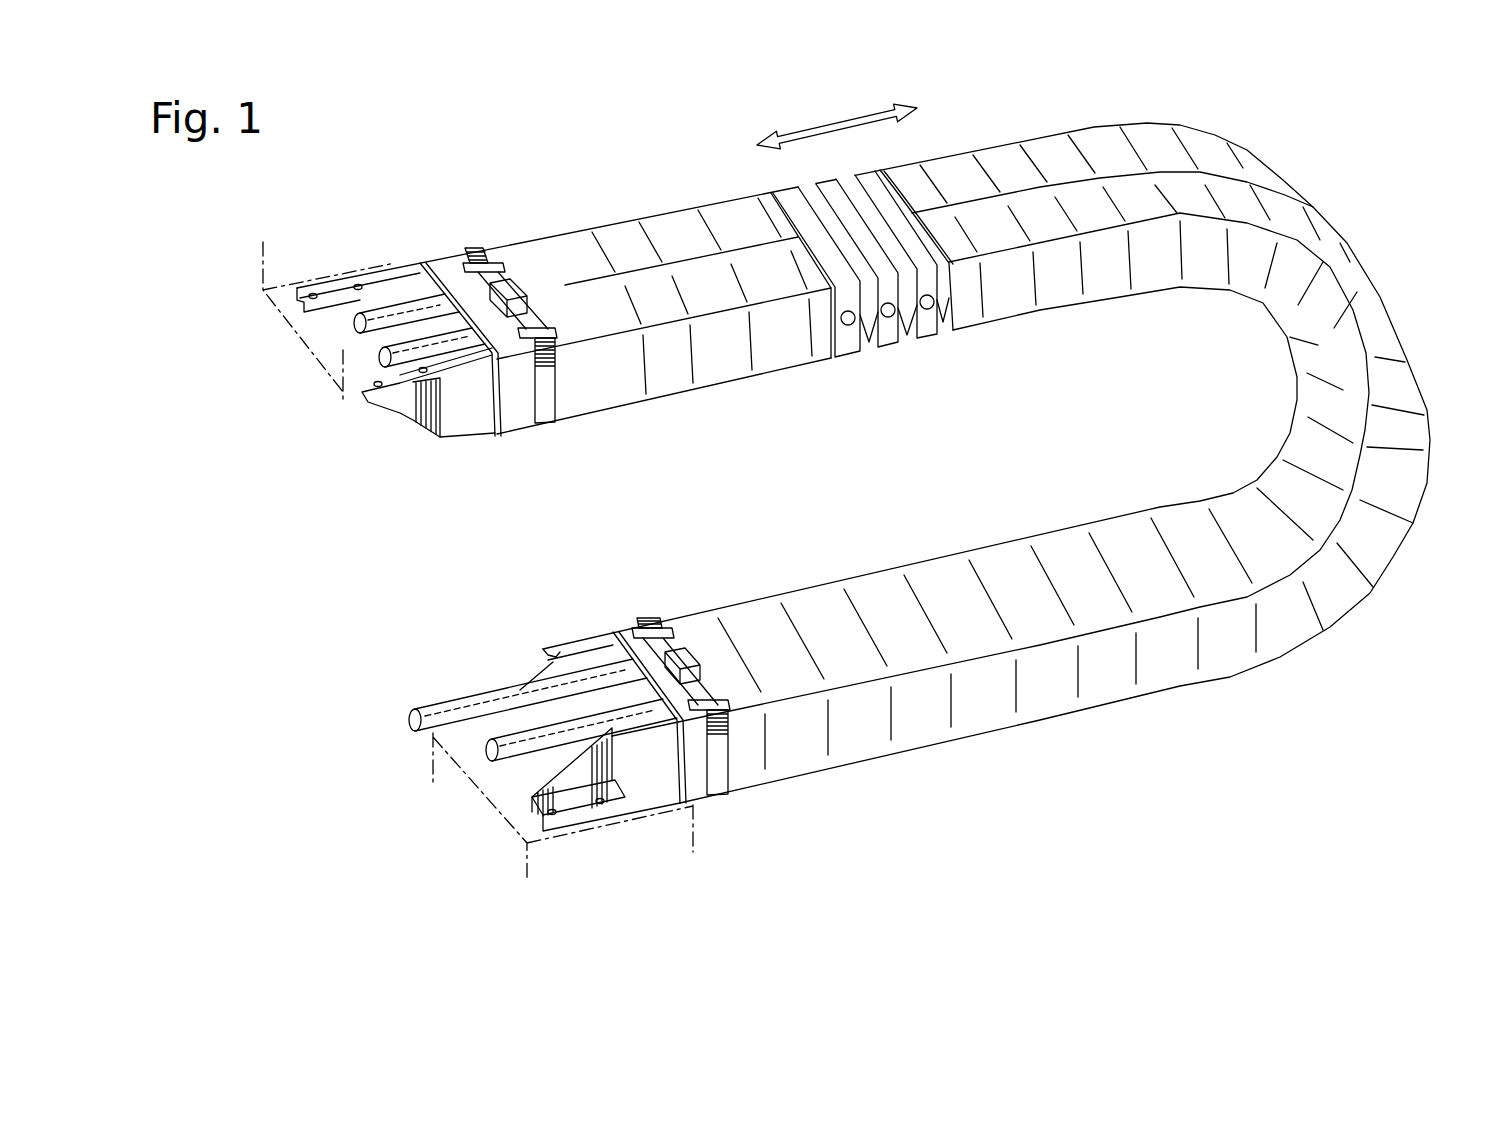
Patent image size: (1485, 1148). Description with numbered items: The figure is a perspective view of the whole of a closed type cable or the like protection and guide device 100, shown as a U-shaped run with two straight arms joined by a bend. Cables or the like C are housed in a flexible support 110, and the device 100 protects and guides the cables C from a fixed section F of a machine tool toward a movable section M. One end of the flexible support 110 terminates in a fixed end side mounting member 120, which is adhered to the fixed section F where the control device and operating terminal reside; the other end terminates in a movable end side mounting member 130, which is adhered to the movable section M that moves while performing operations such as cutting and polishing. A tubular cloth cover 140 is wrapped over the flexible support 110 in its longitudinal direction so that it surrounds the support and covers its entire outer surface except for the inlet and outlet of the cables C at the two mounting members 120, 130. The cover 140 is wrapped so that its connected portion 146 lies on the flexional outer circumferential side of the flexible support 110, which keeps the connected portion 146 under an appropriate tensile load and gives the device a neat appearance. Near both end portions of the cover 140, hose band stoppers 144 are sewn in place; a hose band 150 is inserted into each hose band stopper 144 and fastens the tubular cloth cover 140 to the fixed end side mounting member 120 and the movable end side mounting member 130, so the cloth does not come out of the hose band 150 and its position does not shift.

The closed type cable or the like protection and guide device 100 is at (863, 518).
The flexible support 110 is at (893, 335).
The fixed end side mounting member 120 is at (577, 657).
The movable end side mounting member 130 is at (327, 315).
The tubular cloth cover 140 is at (717, 350).
The hose band stopper 144 is at (487, 256).
The connected portion 146 is at (668, 213).
The hose band 150 is at (465, 281).
The cable or the like C is at (430, 338).
The movable section M is at (327, 353).
The fixed section F is at (503, 797).